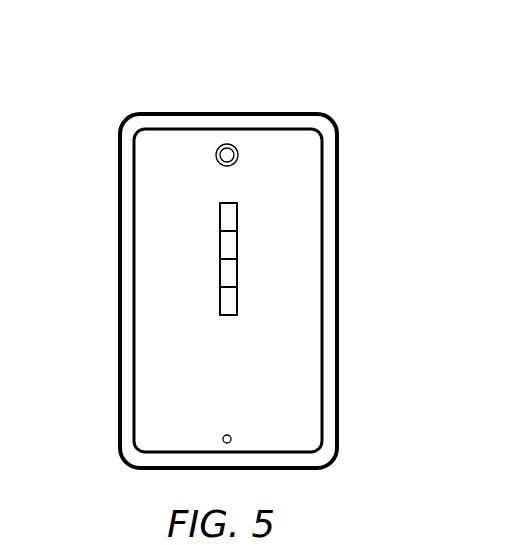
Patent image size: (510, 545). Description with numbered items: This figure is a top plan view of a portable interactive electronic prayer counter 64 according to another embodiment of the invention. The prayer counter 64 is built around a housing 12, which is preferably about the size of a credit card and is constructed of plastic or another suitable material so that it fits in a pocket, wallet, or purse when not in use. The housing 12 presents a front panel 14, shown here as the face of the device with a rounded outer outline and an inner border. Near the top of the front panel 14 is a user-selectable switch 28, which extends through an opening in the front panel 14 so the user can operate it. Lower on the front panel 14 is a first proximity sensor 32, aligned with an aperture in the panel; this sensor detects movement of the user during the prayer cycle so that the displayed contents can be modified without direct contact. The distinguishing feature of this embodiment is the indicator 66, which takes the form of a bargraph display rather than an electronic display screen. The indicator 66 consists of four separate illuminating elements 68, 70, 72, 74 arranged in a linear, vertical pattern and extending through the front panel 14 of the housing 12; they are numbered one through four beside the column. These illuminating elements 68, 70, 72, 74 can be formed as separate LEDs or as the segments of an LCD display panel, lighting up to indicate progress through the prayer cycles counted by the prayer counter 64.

The portable interactive electronic prayer counter 64 is at (102, 123).
The housing 12 is at (120, 324).
The front panel 14 is at (297, 403).
The user-selectable switch 28 is at (227, 144).
The first proximity sensor 32 is at (226, 435).
The indicator 66 is at (289, 200).
The illuminating element 68 is at (231, 222).
The illuminating element 70 is at (231, 250).
The illuminating element 72 is at (231, 278).
The illuminating element 74 is at (231, 306).